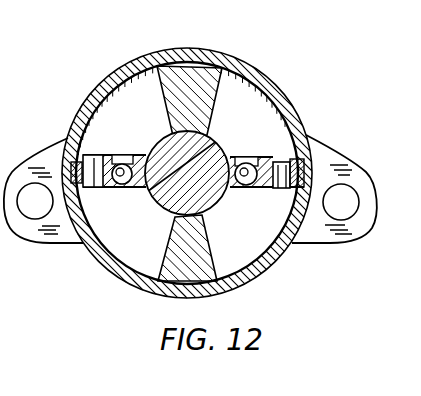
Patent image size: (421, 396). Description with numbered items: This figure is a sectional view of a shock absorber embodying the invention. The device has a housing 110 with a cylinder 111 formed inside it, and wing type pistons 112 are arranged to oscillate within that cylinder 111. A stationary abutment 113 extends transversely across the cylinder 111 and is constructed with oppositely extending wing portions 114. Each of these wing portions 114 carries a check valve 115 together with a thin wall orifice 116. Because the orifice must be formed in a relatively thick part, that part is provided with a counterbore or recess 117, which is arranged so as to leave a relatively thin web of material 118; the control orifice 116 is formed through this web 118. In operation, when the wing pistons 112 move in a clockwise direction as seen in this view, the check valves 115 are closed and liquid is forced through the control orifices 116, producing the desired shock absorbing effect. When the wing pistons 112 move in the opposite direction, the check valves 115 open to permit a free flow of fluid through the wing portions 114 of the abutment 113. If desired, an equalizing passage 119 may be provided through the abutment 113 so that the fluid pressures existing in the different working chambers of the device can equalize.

The housing 110 is at (273, 88).
The cylinder 111 is at (268, 123).
The wing type pistons 112 is at (196, 76).
The stationary abutment 113 is at (214, 195).
The wing portions 114 is at (258, 188).
The check valve 115 is at (113, 188).
The thin wall orifice 116 is at (97, 190).
The counterbore or recess 117 is at (93, 155).
The thin web of material 118 is at (111, 190).
The equalizing passage 119 is at (205, 141).